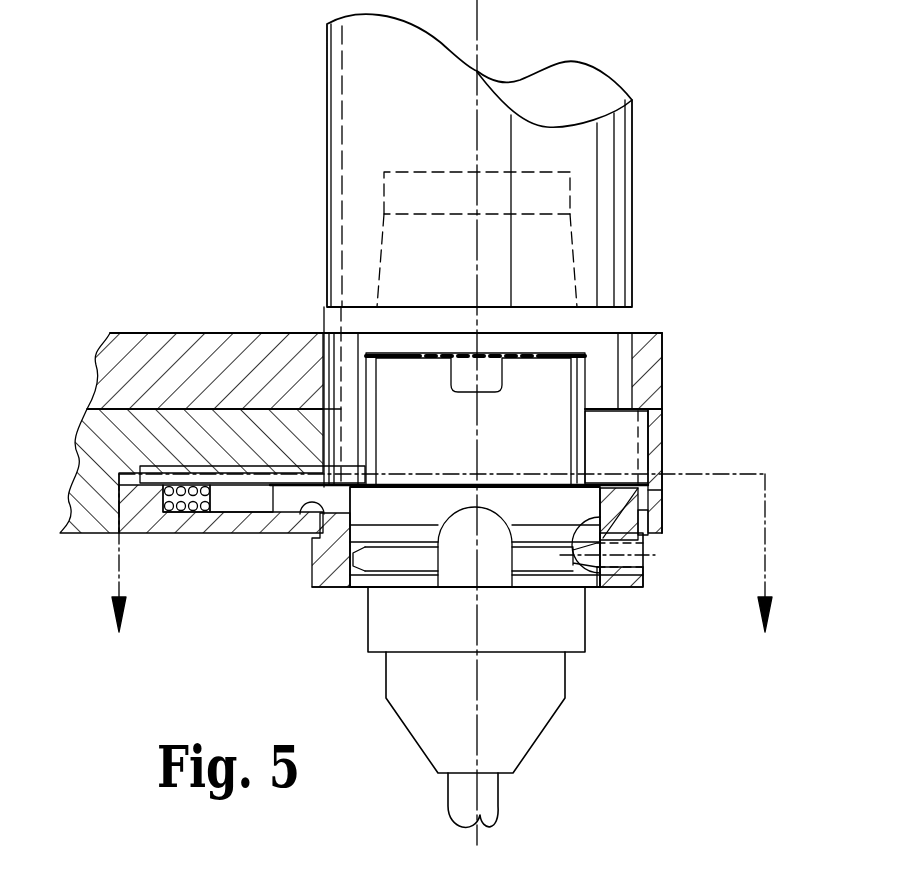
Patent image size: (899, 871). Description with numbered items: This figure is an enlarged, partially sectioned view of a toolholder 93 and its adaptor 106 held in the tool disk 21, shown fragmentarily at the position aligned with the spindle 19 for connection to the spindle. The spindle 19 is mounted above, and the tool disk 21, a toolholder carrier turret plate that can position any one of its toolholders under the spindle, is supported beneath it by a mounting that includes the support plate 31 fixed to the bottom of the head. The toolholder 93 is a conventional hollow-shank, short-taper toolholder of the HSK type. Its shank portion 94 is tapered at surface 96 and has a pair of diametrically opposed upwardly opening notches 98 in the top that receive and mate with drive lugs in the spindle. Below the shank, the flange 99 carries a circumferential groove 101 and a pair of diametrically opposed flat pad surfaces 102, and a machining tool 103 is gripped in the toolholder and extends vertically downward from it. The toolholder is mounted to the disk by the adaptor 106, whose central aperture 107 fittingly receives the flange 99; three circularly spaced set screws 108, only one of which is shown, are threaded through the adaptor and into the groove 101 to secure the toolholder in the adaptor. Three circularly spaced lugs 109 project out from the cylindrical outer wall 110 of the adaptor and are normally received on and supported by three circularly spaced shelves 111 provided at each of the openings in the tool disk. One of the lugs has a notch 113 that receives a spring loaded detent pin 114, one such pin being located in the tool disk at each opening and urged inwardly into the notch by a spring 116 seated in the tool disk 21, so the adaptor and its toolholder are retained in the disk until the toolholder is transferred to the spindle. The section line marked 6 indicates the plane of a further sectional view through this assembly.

The spindle 19 is at (343, 152).
The support plate 31 is at (133, 350).
The tool disk 21 is at (97, 525).
The shank portion 94 is at (325, 407).
The notches 98 is at (467, 368).
The tapered surface 96 is at (393, 421).
The spring loaded detent pin 114 is at (352, 466).
The section line 6- 6 is at (442, 569).
The spring 116 is at (205, 512).
The shelves 111 is at (298, 512).
The flange 99 is at (318, 555).
The notch 113 is at (342, 492).
The circumferential groove 101 is at (347, 592).
The central aperture 107 is at (590, 588).
The set screws 108 is at (615, 588).
The lugs 109 is at (655, 447).
The cylindrical outer wall 110 is at (650, 493).
The adaptor 106 is at (330, 587).
The toolholder 93 is at (316, 609).
The flat pad surfaces 102 is at (465, 565).
The machining tool 103 is at (492, 793).